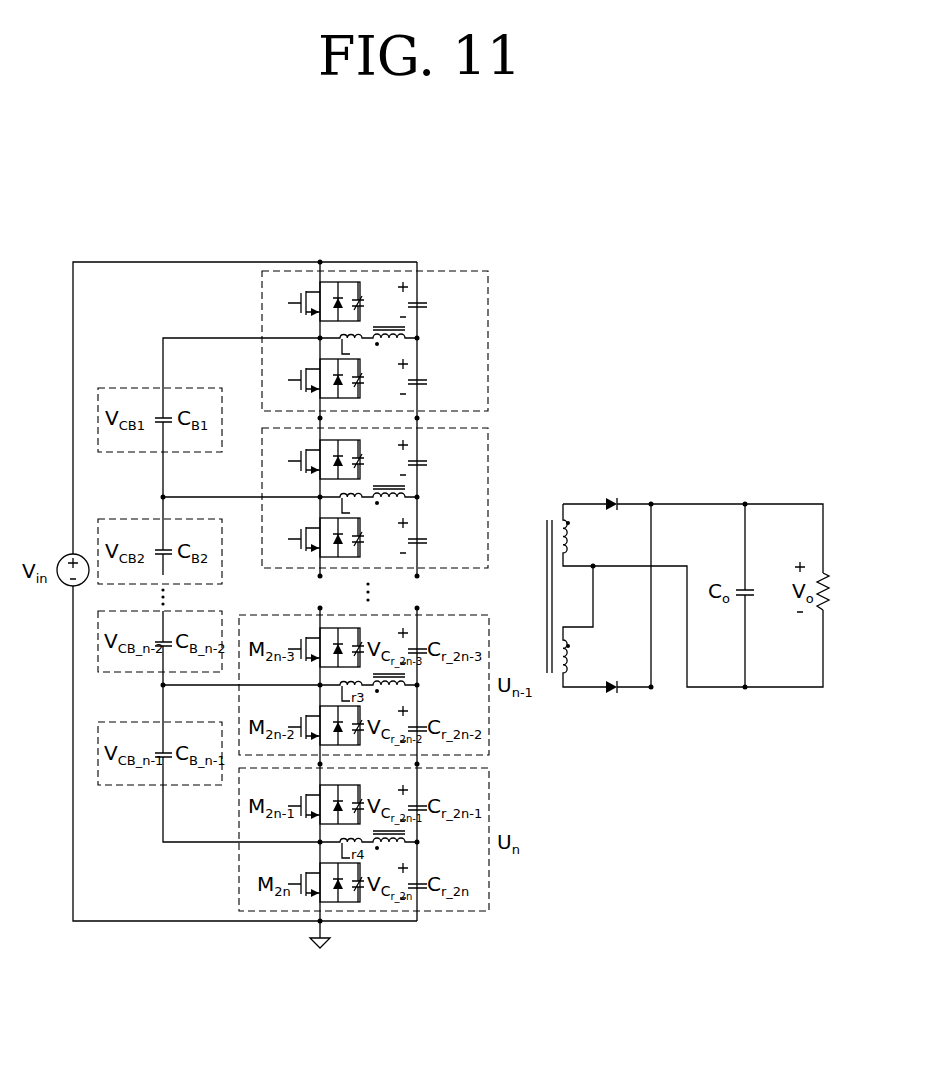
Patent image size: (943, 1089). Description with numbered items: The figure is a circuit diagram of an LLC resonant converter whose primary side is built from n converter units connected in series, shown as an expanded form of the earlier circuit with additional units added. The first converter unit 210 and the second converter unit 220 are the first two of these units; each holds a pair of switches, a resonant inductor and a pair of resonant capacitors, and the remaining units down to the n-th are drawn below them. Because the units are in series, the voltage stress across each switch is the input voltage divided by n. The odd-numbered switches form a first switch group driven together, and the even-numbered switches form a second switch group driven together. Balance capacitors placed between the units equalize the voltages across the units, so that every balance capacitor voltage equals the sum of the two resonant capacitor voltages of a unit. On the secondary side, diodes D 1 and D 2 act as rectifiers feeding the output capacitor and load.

The first converter unit 210 is at (485, 297).
The second converter unit 220 is at (485, 456).
The output diode D1 1 is at (615, 493).
The output diode D2 2 is at (626, 698).